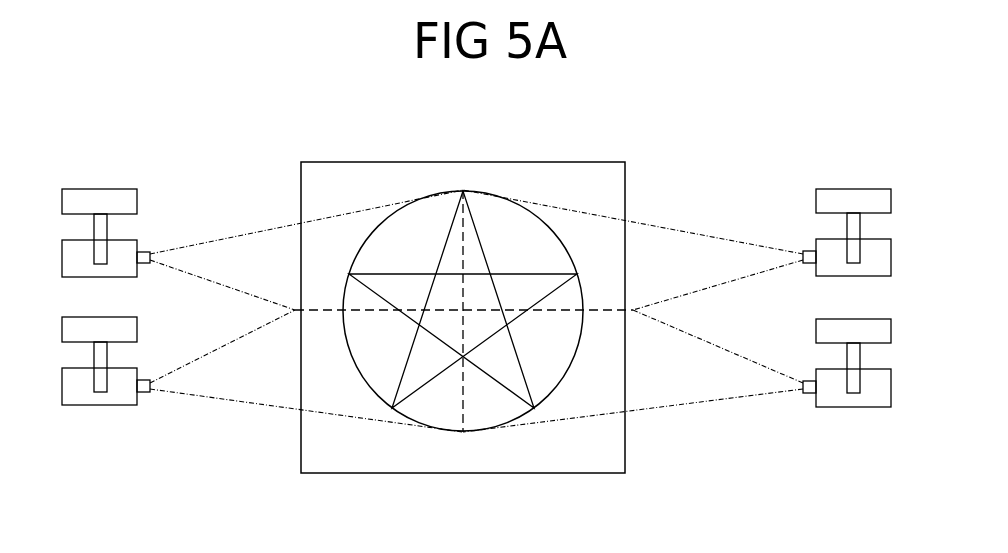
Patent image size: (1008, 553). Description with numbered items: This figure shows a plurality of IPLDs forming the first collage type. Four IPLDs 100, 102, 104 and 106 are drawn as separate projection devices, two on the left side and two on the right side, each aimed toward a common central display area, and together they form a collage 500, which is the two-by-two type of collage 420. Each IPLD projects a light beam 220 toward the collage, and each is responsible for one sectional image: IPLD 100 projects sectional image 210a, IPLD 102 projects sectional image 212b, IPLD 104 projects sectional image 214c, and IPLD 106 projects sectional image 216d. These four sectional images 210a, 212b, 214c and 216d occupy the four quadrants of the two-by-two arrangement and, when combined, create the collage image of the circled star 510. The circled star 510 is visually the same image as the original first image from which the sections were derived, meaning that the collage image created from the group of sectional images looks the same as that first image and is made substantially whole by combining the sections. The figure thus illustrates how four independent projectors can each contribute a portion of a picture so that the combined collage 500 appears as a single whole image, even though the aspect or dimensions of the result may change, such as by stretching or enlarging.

The IPLD 100 is at (132, 283).
The IPLD 102 is at (822, 276).
The IPLD 104 is at (828, 415).
The IPLD 106 is at (130, 413).
The projected light beam 220 is at (629, 242).
The 2×2 type of collage 420 is at (478, 178).
The collage 500 is at (508, 185).
The circled star collage image 510 is at (563, 242).
The sectional image 210a is at (435, 262).
The sectional image 212b is at (548, 262).
The sectional image 214c is at (573, 347).
The sectional image 216d is at (408, 347).